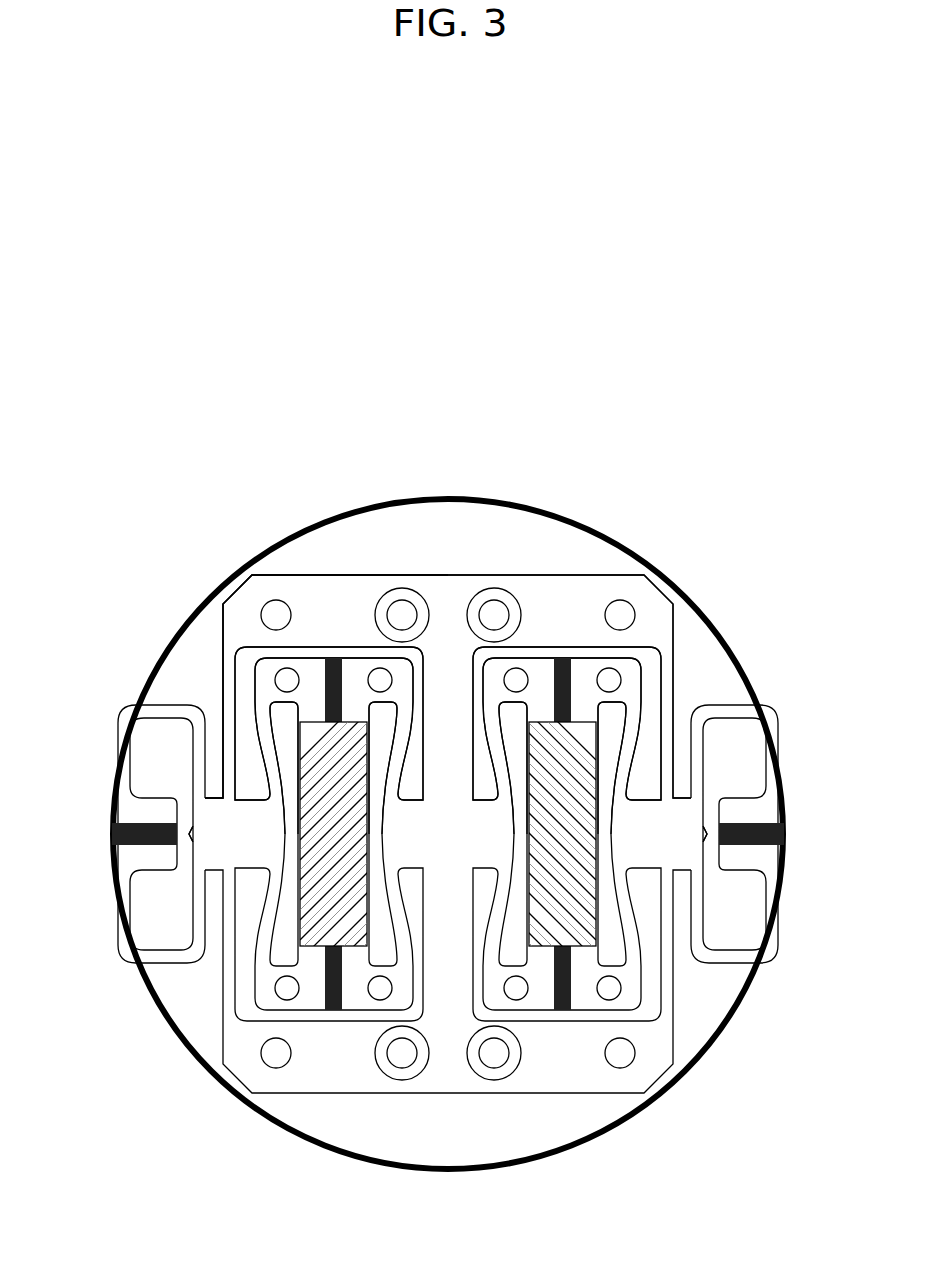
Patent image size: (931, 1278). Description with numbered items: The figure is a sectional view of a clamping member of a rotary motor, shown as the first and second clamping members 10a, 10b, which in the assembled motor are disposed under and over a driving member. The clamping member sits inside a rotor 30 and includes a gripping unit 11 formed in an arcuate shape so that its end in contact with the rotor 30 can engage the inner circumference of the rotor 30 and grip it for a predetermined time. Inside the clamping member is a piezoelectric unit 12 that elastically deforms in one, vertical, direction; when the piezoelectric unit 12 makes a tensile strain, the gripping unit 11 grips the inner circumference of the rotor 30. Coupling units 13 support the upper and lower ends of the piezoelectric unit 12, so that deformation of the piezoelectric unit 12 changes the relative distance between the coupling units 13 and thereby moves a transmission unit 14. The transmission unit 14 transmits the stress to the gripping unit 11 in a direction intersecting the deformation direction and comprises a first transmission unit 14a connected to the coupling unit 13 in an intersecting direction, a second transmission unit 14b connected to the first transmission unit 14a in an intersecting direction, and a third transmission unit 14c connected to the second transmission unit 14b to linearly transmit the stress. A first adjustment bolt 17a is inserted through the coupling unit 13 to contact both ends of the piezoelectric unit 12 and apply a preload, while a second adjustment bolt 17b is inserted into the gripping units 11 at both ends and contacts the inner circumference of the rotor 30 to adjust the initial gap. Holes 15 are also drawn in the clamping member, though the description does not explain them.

The first clamping member 10a is at (281, 573).
The second clamping member 10b is at (461, 630).
The gripping unit 11 is at (132, 940).
The piezoelectric unit 12 is at (297, 900).
The coupling unit 13 is at (352, 665).
The transmission unit 14 is at (92, 532).
The first transmission unit 14a is at (253, 735).
The second transmission unit 14b is at (253, 815).
The third transmission unit 14c is at (232, 655).
The through hole 15 is at (487, 607).
The first adjustment bolt 17a is at (331, 658).
The second adjustment bolt 17b is at (133, 828).
The rotor 30 is at (643, 553).